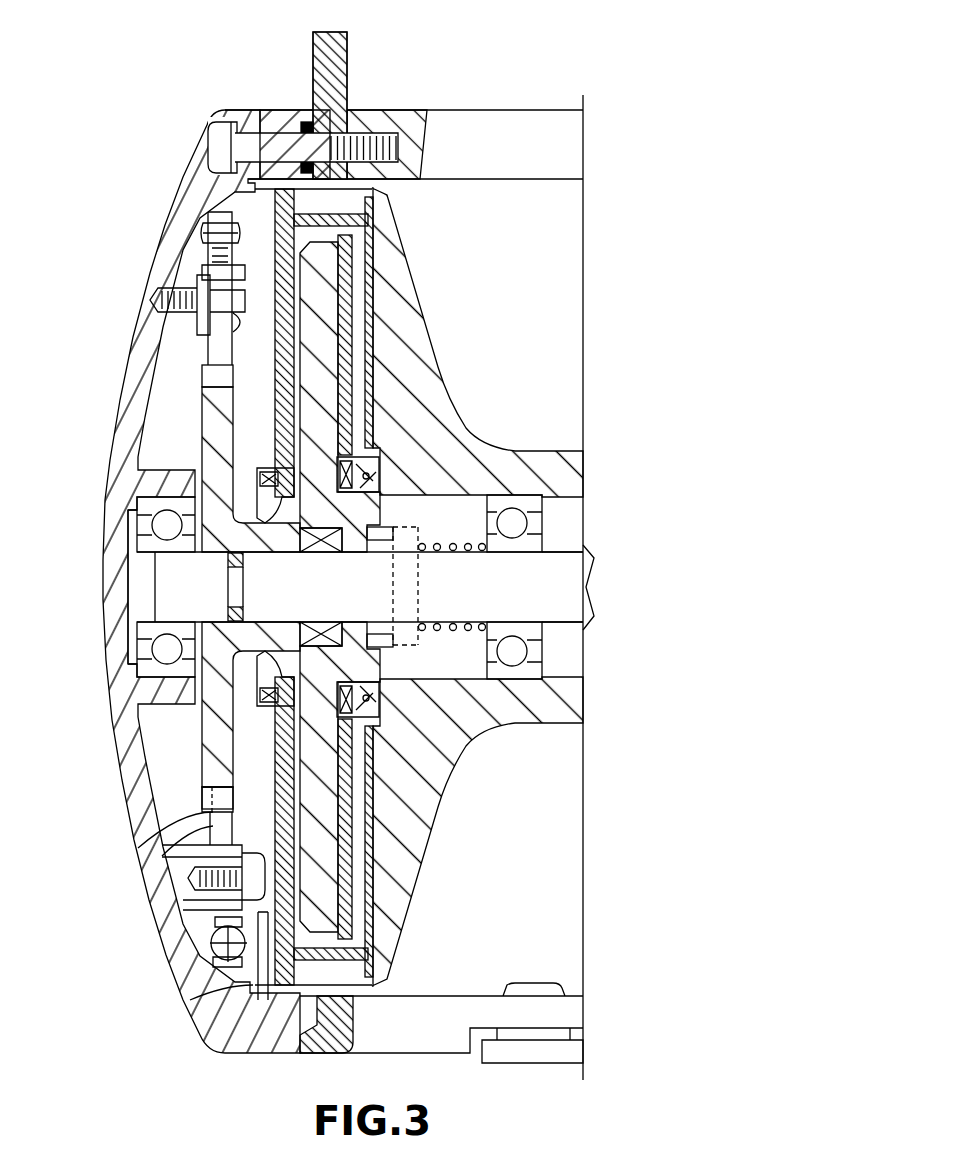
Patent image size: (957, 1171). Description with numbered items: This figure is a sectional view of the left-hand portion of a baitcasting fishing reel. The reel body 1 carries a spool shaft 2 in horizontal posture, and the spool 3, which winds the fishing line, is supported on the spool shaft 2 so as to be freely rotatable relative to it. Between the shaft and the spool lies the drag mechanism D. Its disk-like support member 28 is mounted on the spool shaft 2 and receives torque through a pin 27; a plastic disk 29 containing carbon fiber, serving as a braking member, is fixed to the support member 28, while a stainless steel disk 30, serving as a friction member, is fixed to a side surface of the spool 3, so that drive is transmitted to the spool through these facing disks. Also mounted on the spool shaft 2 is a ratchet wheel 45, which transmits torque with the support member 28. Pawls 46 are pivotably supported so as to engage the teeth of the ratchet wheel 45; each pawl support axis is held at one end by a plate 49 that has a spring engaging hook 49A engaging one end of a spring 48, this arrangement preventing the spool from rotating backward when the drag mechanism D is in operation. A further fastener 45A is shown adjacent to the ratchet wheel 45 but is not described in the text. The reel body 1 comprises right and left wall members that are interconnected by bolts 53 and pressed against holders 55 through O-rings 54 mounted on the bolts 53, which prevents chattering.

The reel body 1 is at (207, 112).
The spool shaft 2 is at (365, 587).
The spool 3 is at (537, 727).
The pin 27 is at (410, 528).
The support member 28 is at (277, 433).
The plastic disk 29 is at (350, 253).
The disk 30 is at (375, 332).
The ratchet wheel 45 is at (202, 773).
The bolt 45A is at (197, 377).
The pawls 46 is at (210, 343).
The spring 48 is at (205, 240).
The plate 49 is at (252, 300).
The spring engaging hook 49A is at (178, 205).
The bolts 53 is at (203, 140).
The O-rings 54 is at (307, 120).
The holders 55 is at (347, 84).
The drag mechanism D is at (386, 297).